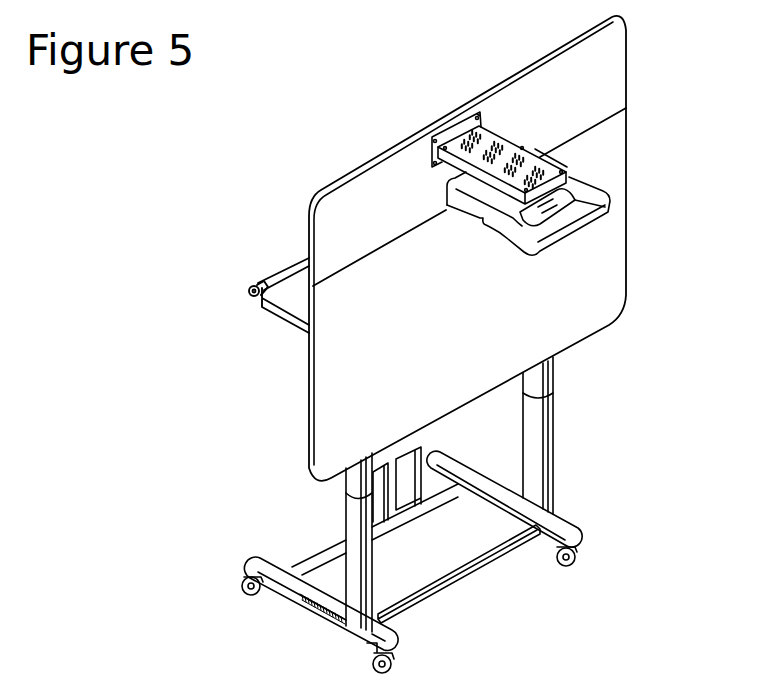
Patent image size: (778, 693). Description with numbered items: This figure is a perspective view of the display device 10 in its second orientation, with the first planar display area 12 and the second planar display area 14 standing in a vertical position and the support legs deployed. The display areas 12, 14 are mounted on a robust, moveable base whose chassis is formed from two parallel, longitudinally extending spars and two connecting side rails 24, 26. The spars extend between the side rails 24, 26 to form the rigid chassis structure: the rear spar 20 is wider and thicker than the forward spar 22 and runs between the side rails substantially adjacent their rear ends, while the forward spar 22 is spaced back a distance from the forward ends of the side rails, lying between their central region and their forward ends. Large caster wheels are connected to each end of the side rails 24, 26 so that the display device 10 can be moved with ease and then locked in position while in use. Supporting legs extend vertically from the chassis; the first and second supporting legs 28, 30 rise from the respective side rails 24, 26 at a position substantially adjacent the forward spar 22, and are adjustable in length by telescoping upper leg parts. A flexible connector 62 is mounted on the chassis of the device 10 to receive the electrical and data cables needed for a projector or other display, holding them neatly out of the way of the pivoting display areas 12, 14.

The display device 10 is at (238, 178).
The first planar display area 12 is at (615, 71).
The second planar display area 14 is at (608, 150).
The rear spar 20 is at (431, 567).
The forward spar 22 is at (488, 558).
The side rail 24 is at (575, 530).
The side rail 26 is at (385, 633).
The first supporting leg 28 is at (350, 512).
The second supporting leg 30 is at (555, 440).
The flexible connector 62 is at (409, 450).